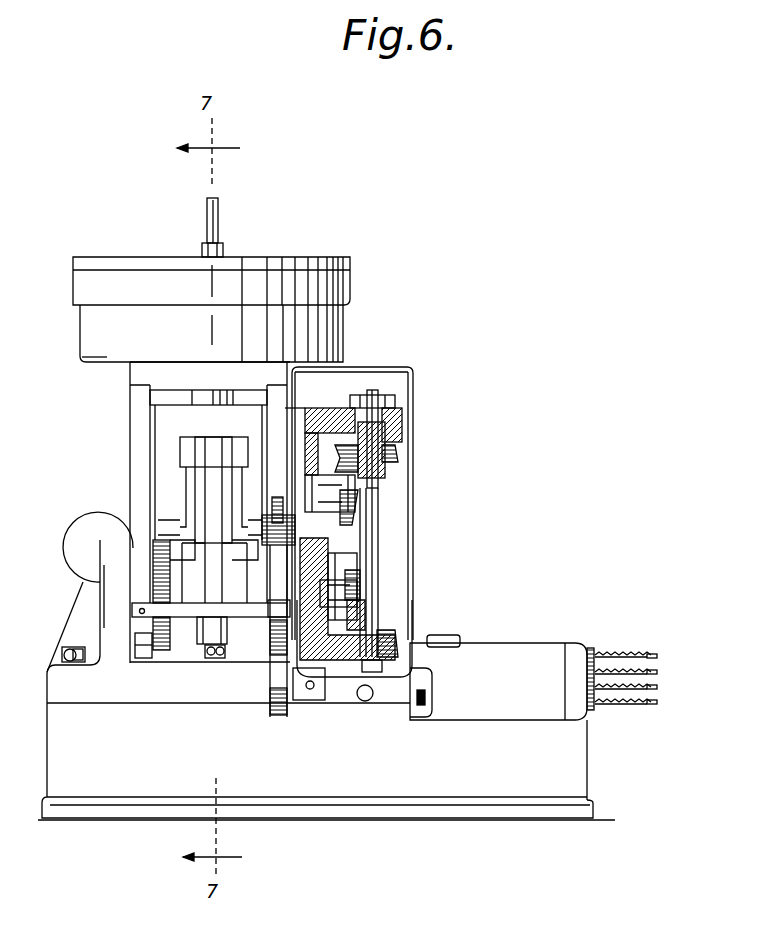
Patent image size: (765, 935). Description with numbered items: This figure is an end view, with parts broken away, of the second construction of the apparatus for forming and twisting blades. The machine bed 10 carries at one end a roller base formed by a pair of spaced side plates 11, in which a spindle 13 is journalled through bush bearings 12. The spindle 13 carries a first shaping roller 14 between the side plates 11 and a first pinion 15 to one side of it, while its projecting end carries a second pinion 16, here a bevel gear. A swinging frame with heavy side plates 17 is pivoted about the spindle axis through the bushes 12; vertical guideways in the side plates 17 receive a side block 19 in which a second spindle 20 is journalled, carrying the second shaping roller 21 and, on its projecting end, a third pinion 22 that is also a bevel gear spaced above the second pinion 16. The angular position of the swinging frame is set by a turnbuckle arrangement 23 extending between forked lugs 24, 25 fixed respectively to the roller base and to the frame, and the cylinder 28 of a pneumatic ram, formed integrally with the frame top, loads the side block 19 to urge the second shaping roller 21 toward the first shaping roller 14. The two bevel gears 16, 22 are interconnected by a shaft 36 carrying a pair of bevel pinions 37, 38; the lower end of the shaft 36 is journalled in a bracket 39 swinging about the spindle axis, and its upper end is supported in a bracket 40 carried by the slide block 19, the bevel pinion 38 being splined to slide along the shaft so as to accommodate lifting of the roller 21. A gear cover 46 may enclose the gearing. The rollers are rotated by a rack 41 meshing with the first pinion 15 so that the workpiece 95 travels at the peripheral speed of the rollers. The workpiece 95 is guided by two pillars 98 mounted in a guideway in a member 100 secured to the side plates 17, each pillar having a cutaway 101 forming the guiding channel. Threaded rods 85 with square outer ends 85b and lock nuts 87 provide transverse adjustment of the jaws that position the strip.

The machine bed 10 is at (355, 783).
The side plates 11 is at (117, 593).
The bush bearings 12 is at (338, 555).
The spindle 13 is at (350, 602).
The first shaping roller 14 is at (215, 630).
The first pinion 15 is at (165, 650).
The second pinion 16 is at (350, 567).
The side plates of swinging frame 17 is at (140, 400).
The side block 19 is at (163, 435).
The second spindle 20 is at (370, 487).
The second shaping roller 21 is at (213, 450).
The third pinion 22 is at (350, 525).
The turnbuckle arrangement 23 is at (273, 623).
The forked lug 24 is at (293, 672).
The forked lug 25 is at (300, 533).
The cylinder 28 is at (345, 318).
The shaft 36 is at (373, 533).
The bevel pinion 37 is at (410, 640).
The bevel pinion 38 is at (397, 455).
The bracket 39 is at (338, 665).
The bracket 40 is at (333, 413).
The rack 41 is at (162, 545).
The gear cover 46 is at (410, 403).
The threaded rod 85 is at (627, 652).
The outer ends of threaded rods 85b is at (650, 707).
The lock nut 87 is at (590, 650).
The workpiece 95 is at (205, 562).
The pillars 98 is at (268, 546).
The member 100 is at (130, 647).
The cutaway 101 is at (220, 542).